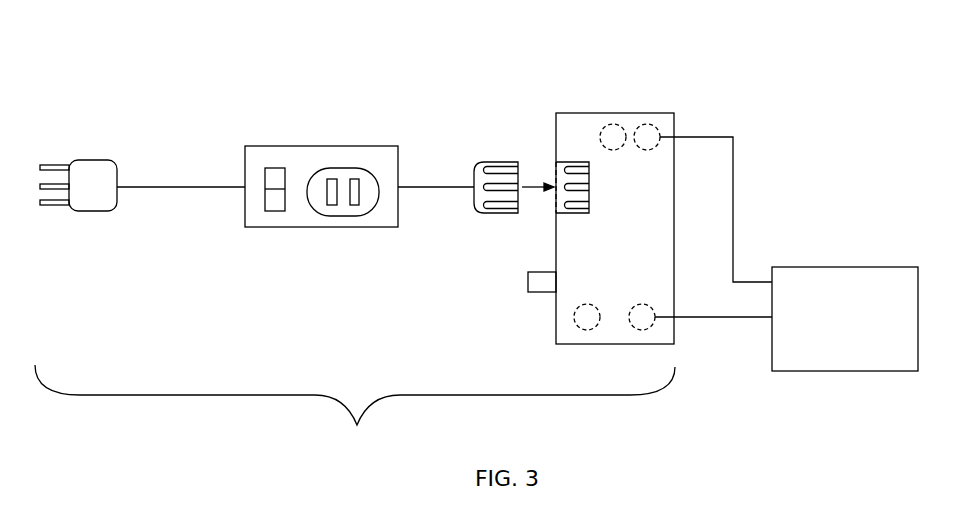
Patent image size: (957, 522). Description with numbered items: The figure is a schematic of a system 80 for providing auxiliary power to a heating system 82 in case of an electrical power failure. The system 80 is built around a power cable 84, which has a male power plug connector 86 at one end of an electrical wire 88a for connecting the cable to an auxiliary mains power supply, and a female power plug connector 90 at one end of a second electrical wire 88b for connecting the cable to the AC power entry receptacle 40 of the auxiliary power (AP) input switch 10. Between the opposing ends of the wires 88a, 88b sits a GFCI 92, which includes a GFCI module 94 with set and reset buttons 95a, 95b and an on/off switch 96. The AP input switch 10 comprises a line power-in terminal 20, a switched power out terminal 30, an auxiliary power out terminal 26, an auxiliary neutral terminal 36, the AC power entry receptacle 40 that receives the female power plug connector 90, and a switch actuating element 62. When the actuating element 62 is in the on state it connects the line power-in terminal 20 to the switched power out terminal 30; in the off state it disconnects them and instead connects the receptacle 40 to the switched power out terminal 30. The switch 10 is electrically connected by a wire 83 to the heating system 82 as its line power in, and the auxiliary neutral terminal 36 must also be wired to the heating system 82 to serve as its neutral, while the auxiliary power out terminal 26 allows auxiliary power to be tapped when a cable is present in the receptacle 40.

The auxiliary power (AP) input switch 10 is at (674, 178).
The line power-in terminal 20 is at (587, 330).
The auxiliary power out terminal 26 is at (612, 124).
The switched power out terminal 30 is at (642, 330).
The auxiliary neutral terminal 36 is at (647, 124).
The AC power entry receptacle 40 is at (566, 160).
The switch actuating element 62 is at (528, 283).
The system 80 is at (355, 407).
The heating system 82 is at (838, 267).
The wire 83 is at (710, 316).
The power cable 84 is at (416, 70).
The male power plug connector 86 is at (93, 160).
The electrical wire 88a is at (155, 186).
The electrical wire 88b is at (432, 186).
The female power plug connector 90 is at (486, 162).
The GFCI 92 is at (298, 146).
The GFCI module 94 is at (346, 168).
The set button 95a is at (358, 178).
The reset button 95b is at (331, 178).
The on/off switch 96 is at (273, 168).